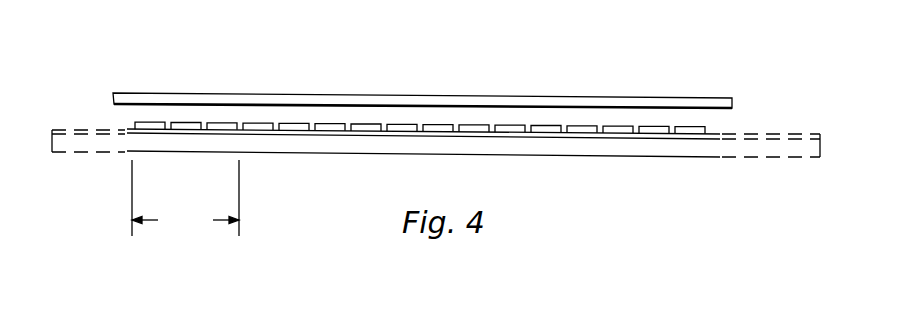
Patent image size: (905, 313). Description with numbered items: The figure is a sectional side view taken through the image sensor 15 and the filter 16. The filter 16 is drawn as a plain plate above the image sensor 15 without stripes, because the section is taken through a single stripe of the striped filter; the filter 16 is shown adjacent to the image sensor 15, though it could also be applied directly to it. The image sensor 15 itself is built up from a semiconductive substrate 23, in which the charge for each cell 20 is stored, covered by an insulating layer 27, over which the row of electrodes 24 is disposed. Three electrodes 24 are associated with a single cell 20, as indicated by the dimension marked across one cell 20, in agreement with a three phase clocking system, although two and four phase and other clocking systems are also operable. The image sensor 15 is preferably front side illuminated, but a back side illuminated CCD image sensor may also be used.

The image sensor 15 is at (465, 161).
The filter 16 is at (732, 103).
The cell 20 is at (202, 262).
The semiconductive substrate 23 is at (790, 147).
The electrode 24 is at (220, 123).
The insulating layer 27 is at (615, 137).